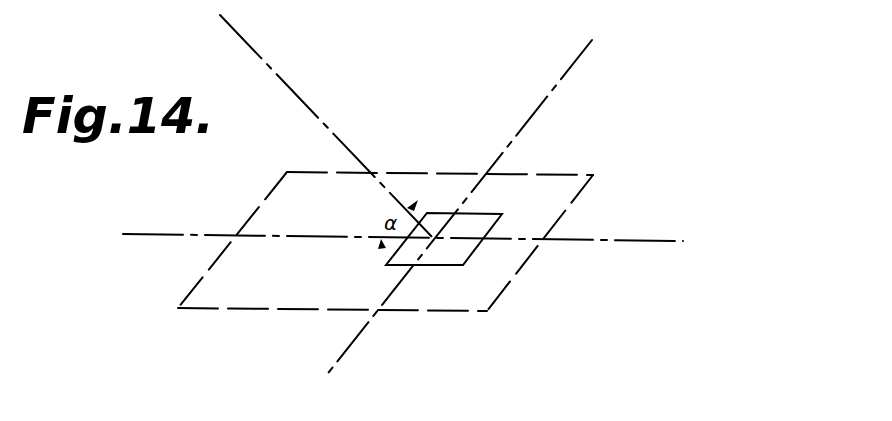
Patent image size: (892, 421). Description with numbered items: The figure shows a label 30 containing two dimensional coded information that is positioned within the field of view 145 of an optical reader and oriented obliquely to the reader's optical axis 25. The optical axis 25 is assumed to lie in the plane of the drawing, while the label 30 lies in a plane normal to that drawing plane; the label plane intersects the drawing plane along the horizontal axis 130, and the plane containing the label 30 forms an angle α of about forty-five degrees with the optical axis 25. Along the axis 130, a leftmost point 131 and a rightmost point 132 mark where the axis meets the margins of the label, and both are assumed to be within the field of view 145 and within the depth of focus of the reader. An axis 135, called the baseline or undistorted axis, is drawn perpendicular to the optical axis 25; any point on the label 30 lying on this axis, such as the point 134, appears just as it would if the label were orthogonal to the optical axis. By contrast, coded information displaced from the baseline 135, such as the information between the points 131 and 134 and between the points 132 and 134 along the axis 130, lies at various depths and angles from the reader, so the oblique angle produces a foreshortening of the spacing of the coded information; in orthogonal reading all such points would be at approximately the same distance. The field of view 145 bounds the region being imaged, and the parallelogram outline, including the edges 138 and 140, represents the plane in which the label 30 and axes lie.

The optical axis 25 is at (254, 46).
The label 30 is at (440, 258).
The horizontal axis 130 is at (660, 243).
The leftmost point 131 is at (408, 240).
The rightmost point 132 is at (485, 243).
The point 134 is at (443, 238).
The baseline or undistorted axis 135 is at (575, 58).
The edge of plane 138 is at (233, 235).
The edge of plane 140 is at (542, 243).
The field of view 145 is at (266, 303).